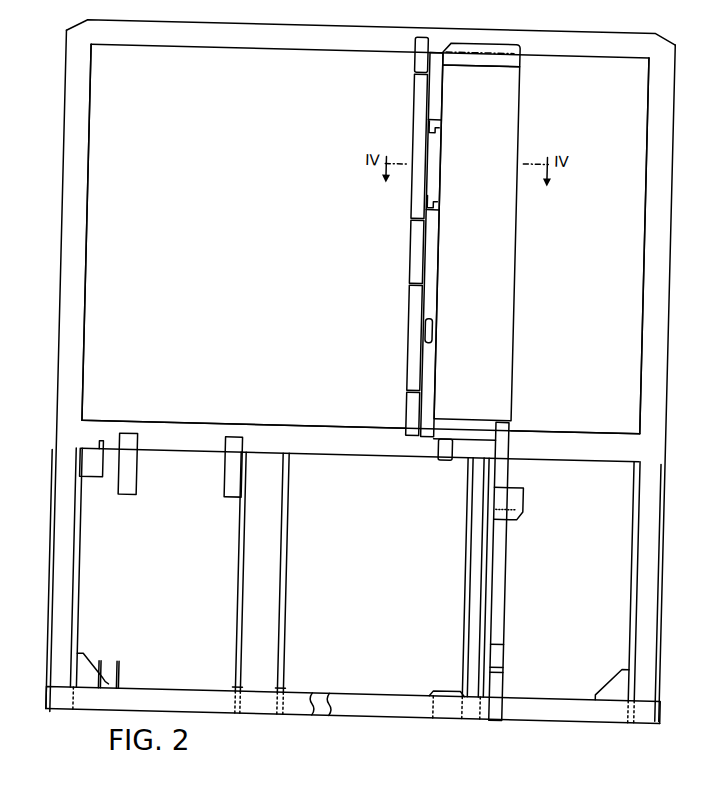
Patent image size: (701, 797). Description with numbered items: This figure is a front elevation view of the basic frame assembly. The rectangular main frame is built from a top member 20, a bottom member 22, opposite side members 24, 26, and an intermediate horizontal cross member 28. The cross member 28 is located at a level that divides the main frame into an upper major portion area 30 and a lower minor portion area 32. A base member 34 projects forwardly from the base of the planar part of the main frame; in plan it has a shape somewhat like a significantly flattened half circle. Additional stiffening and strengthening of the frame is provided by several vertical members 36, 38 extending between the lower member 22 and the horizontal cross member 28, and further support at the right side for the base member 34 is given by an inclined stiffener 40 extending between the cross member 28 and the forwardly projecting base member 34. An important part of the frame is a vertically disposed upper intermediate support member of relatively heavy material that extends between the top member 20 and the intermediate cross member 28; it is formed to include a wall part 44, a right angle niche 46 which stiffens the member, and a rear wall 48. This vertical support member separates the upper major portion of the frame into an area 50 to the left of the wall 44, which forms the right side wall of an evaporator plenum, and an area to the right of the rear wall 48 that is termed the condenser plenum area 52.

The top member 20 is at (266, 46).
The bottom member 22 is at (332, 698).
The side member 24 is at (63, 319).
The side member 26 is at (640, 351).
The intermediate cross member 28 is at (201, 427).
The upper major portion area 30 is at (342, 372).
The lower minor portion area 32 is at (43, 577).
The base member 34 is at (534, 703).
The vertical member 36 is at (278, 585).
The vertical member 38 is at (479, 569).
The inclined stiffener 40 is at (508, 599).
The wall part 44 is at (422, 250).
The right angle niche 46 is at (434, 226).
The rear wall 48 is at (518, 277).
The left compartment 50 is at (219, 224).
The condenser plenum area 52 is at (562, 243).